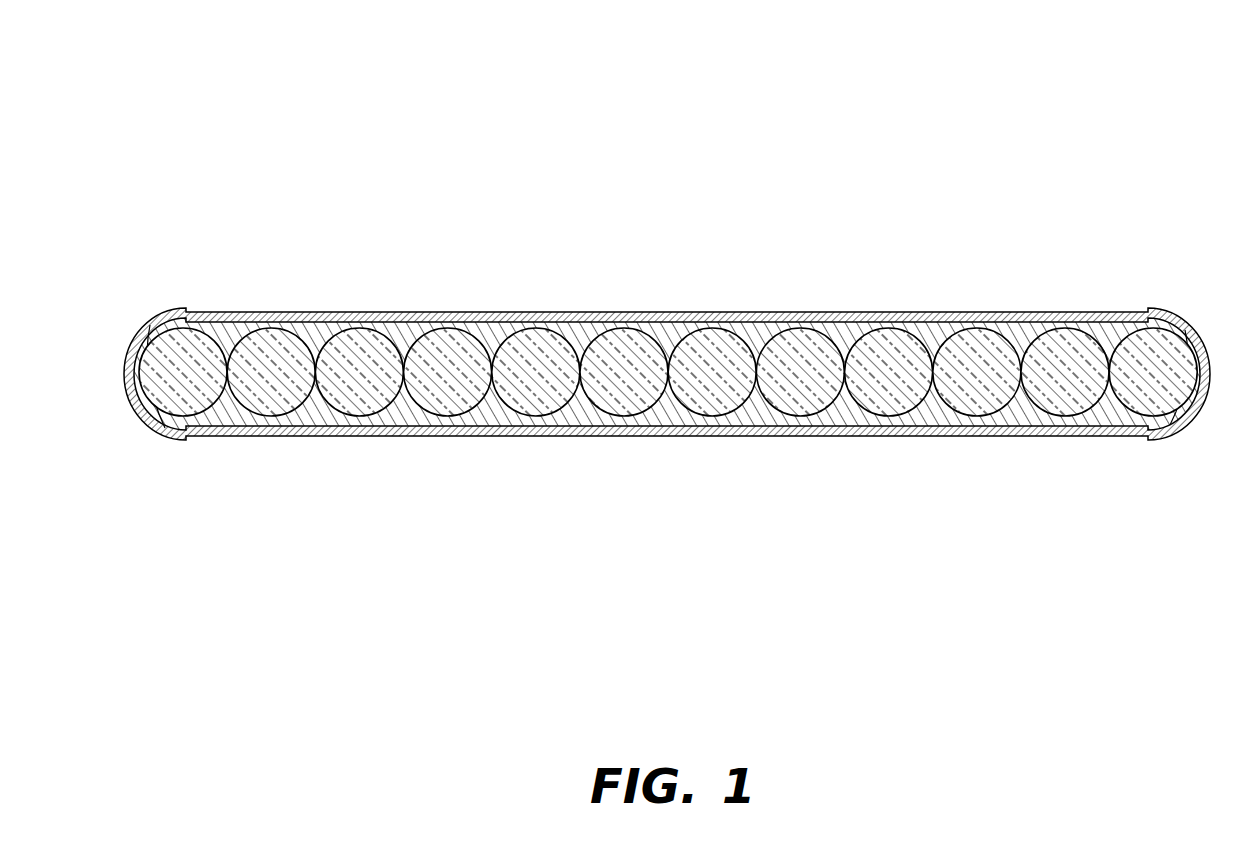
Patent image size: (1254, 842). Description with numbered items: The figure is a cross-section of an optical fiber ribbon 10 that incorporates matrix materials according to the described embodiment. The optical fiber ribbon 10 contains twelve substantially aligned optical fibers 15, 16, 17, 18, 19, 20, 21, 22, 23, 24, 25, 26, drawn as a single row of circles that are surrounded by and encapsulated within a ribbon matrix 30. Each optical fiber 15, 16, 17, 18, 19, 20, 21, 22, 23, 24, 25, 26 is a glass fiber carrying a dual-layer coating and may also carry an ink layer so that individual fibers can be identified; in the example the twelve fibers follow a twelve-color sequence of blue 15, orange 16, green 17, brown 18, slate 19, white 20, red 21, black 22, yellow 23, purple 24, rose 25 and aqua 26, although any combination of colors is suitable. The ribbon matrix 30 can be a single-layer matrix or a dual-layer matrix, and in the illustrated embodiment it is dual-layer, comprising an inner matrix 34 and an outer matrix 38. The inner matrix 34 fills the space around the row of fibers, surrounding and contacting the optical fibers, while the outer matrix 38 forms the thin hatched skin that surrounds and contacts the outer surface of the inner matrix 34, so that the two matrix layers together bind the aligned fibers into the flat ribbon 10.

The optical fiber ribbon 10 is at (566, 106).
The ribbon matrix 30 is at (643, 241).
The inner matrix 34 is at (667, 374).
The outer matrix 38 is at (759, 333).
The optical fiber 15 is at (183, 412).
The optical fiber 16 is at (271, 412).
The optical fiber 17 is at (359, 412).
The optical fiber 18 is at (447, 412).
The optical fiber 19 is at (536, 412).
The optical fiber 20 is at (624, 412).
The optical fiber 21 is at (712, 412).
The optical fiber 22 is at (800, 412).
The optical fiber 23 is at (888, 412).
The optical fiber 24 is at (976, 412).
The optical fiber 25 is at (1065, 412).
The optical fiber 26 is at (1153, 412).